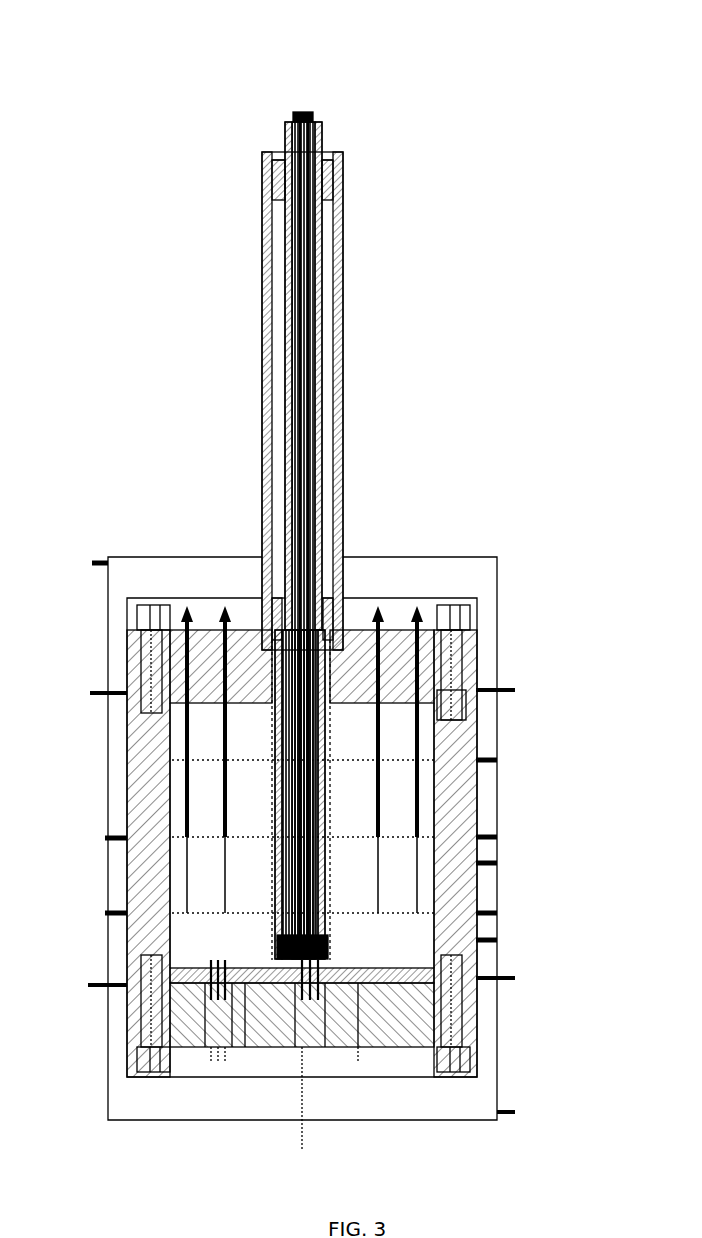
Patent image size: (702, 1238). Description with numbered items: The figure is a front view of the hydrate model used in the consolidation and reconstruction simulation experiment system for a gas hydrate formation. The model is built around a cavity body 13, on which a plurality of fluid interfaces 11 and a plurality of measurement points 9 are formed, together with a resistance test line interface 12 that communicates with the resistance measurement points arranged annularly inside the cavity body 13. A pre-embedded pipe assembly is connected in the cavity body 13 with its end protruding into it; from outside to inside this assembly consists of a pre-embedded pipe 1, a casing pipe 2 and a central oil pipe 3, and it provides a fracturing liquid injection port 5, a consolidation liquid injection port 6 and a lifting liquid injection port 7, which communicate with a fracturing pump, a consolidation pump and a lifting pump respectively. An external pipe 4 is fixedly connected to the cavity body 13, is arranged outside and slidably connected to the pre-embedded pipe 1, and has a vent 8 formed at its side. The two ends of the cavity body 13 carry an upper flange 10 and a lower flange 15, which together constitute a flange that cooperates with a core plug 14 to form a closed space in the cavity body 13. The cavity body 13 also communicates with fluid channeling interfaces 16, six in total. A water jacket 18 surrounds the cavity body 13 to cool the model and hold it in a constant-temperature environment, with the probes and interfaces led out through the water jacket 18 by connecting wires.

The pre-embedded pipe 1 is at (262, 558).
The casing pipe 2 is at (345, 540).
The central oil pipe 3 is at (344, 376).
The external pipe 4 is at (262, 176).
The fracturing liquid injection port 5 is at (288, 124).
The consolidation liquid injection port 6 is at (320, 124).
The lifting liquid injection port 7 is at (303, 113).
The vent 8 is at (325, 166).
The measurement point 9 is at (180, 628).
The upper flange 10 is at (240, 640).
The fluid interface 11 is at (252, 632).
The resistance test line interface 12 is at (108, 838).
The cavity body 13 is at (137, 867).
The core plug 14 is at (130, 995).
The lower flange 15 is at (130, 1045).
The fluid channeling interface 16 is at (292, 1033).
The water jacket 18 is at (497, 790).